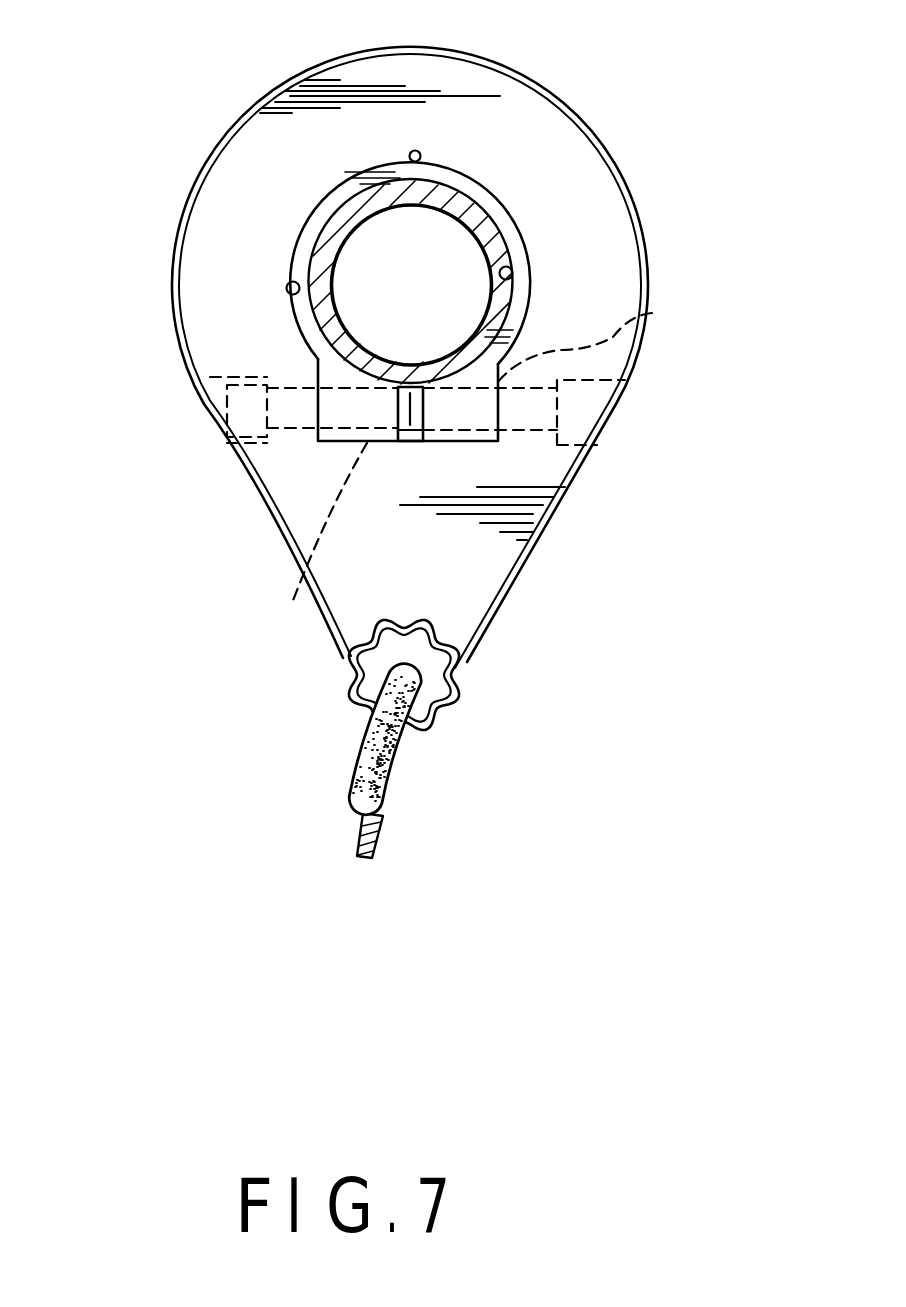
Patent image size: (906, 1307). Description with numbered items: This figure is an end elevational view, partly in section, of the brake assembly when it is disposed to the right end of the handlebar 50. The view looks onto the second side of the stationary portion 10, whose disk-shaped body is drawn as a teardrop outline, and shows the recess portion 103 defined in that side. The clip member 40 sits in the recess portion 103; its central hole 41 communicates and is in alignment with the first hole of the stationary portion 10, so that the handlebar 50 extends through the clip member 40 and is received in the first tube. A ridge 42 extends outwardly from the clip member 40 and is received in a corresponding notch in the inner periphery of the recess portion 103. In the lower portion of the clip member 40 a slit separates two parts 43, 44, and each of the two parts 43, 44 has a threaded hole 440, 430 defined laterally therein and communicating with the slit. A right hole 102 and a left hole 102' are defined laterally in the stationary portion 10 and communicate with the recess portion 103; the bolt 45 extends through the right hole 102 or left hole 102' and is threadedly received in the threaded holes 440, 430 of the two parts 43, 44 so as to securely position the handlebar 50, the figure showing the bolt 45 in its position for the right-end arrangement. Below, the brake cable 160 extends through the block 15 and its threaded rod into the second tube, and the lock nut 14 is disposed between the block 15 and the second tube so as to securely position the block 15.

The stationary portion 10 is at (292, 71).
The ridge 42 is at (420, 155).
The clip member 40 is at (516, 204).
The central hole 41 is at (513, 293).
The handlebar 50 is at (338, 226).
The recess portion 103 is at (294, 302).
The threaded hole 430 is at (652, 313).
The right hole 102 is at (189, 430).
The left hole 102' is at (657, 416).
The bolt 45 is at (230, 440).
The part 44 is at (320, 441).
The threaded hole 440 is at (291, 548).
The part 43 is at (490, 441).
The lock nut 14 is at (453, 697).
The block 15 is at (427, 705).
The brake cable 160 is at (372, 847).